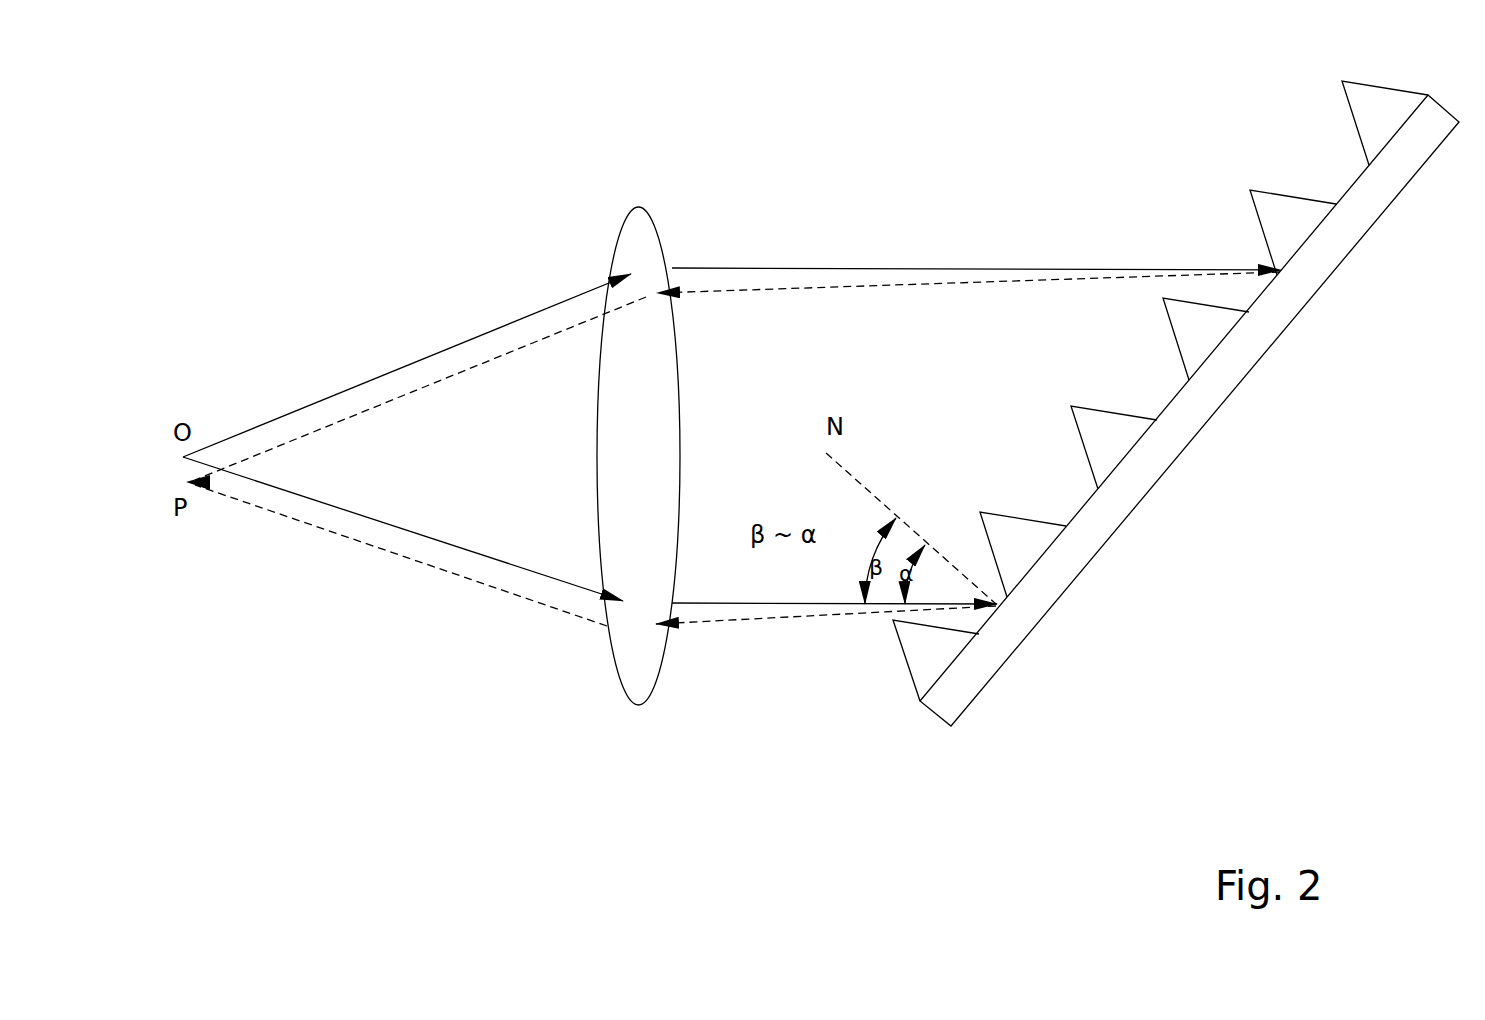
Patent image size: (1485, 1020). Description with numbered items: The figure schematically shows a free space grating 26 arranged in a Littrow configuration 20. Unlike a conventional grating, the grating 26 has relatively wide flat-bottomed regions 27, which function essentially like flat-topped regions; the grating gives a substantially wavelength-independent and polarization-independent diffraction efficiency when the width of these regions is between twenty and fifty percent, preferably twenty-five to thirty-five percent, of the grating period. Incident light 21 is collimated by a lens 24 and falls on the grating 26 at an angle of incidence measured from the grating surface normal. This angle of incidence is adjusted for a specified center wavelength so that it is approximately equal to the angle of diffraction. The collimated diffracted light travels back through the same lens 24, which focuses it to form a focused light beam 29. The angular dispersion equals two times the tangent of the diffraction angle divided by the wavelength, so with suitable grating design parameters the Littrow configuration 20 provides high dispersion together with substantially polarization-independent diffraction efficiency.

The Littrow configuration 20 is at (806, 704).
The incident light 21 is at (511, 322).
The lens 24 is at (645, 702).
The free space grating 26 is at (1100, 548).
The flat-bottomed regions 27 is at (1170, 398).
The focused light beam 29 is at (497, 591).